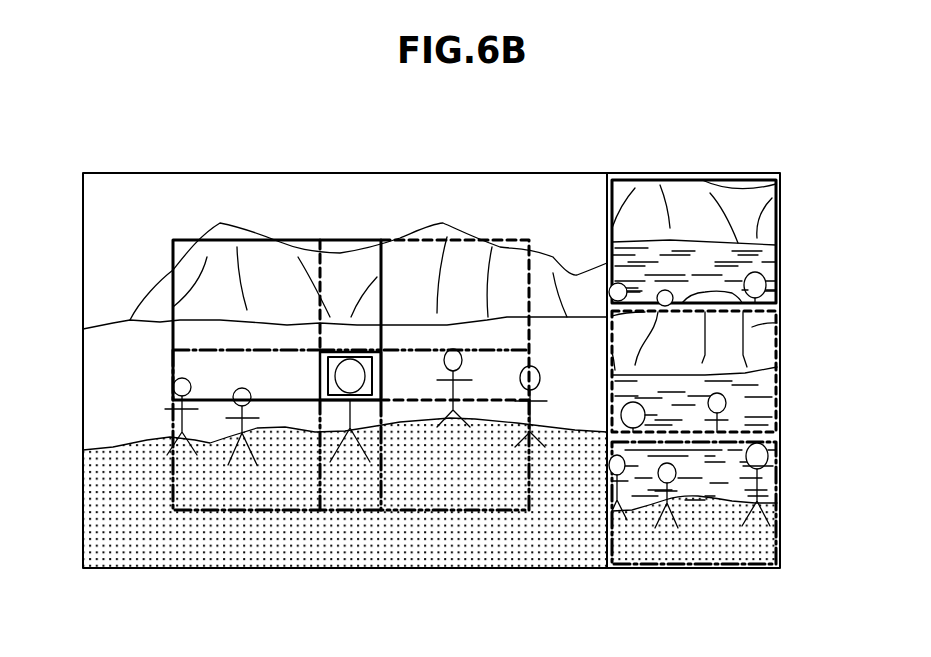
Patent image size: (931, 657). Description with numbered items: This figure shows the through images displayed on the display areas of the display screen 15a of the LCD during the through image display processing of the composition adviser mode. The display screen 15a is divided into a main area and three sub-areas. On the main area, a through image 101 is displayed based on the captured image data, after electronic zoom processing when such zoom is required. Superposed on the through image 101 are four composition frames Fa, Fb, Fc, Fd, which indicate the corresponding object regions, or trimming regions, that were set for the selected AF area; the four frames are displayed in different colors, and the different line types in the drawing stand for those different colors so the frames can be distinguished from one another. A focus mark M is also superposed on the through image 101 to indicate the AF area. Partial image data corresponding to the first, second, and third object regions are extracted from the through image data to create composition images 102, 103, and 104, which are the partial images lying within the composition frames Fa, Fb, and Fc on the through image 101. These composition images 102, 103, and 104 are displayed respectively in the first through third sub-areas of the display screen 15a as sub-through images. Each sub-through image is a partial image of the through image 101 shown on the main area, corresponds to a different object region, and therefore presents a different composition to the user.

The display screen 15a is at (531, 163).
The through image 101 is at (178, 197).
The composition image 102 is at (752, 194).
The composition image 103 is at (752, 328).
The composition image 104 is at (764, 466).
The composition frame Fa is at (298, 243).
The composition frame Fb is at (466, 240).
The composition frame Fc is at (250, 510).
The composition frame Fd is at (447, 512).
The focus mark M is at (343, 352).